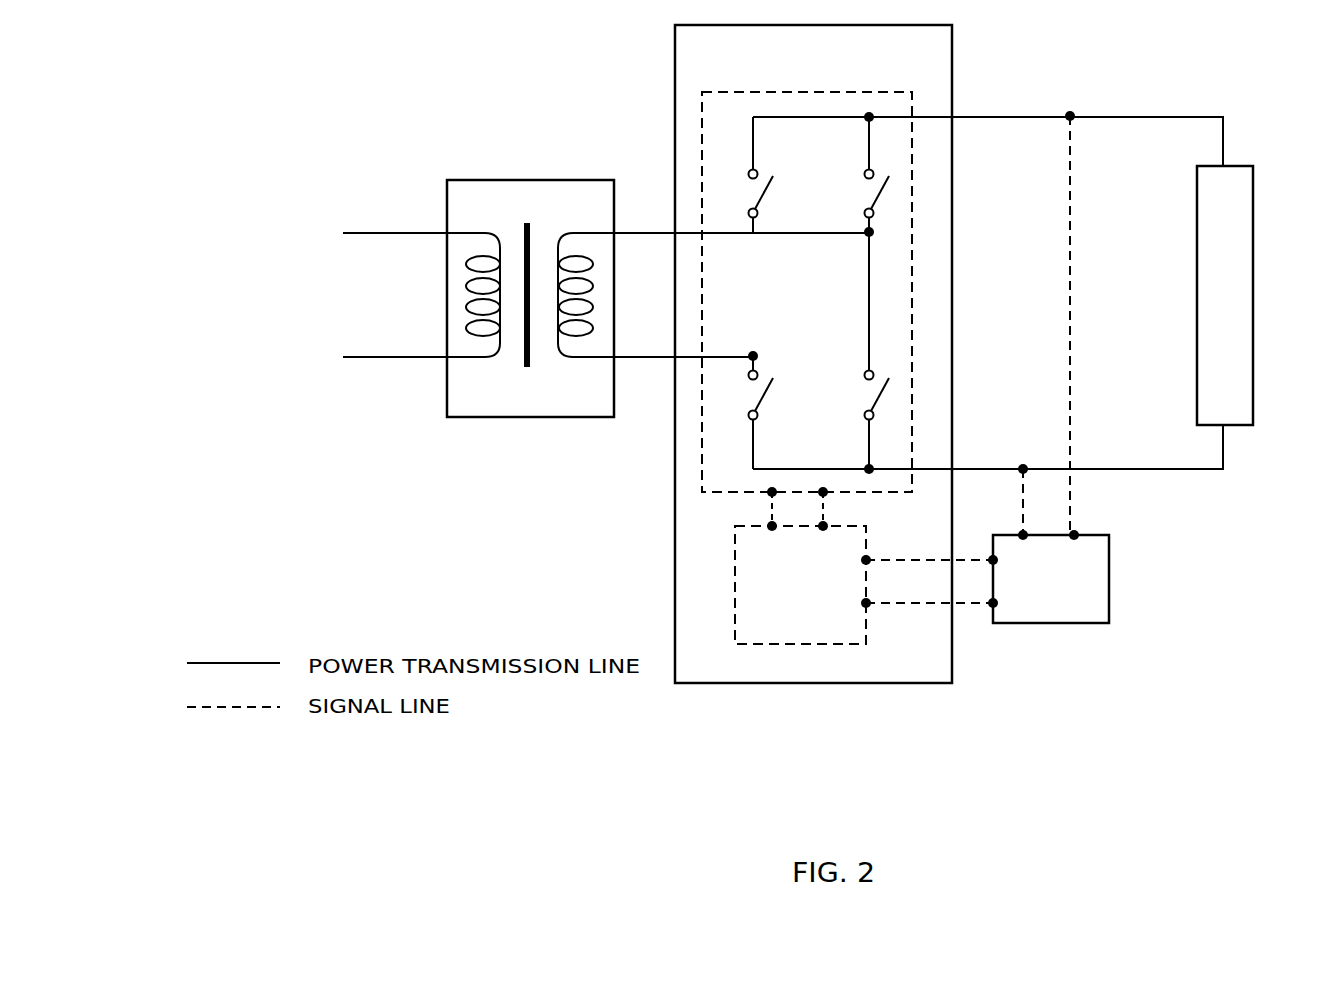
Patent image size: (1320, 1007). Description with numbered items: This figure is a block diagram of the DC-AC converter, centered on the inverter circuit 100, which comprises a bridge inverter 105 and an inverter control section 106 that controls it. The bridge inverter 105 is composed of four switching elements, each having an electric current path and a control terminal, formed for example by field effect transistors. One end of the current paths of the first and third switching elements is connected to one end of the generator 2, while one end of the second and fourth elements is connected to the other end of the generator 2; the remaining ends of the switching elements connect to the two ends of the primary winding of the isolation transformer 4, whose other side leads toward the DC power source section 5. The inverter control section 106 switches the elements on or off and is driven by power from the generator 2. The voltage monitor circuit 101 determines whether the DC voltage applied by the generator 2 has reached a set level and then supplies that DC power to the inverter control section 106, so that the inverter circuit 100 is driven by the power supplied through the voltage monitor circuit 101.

The generator 2 is at (1253, 370).
The isolation transformer 4 is at (505, 455).
The DC power source section 5 is at (318, 294).
The inverter circuit 100 is at (720, 683).
The voltage monitor circuit 101 is at (1040, 623).
The bridge inverter 105 is at (741, 91).
The inverter control section 106 is at (866, 636).